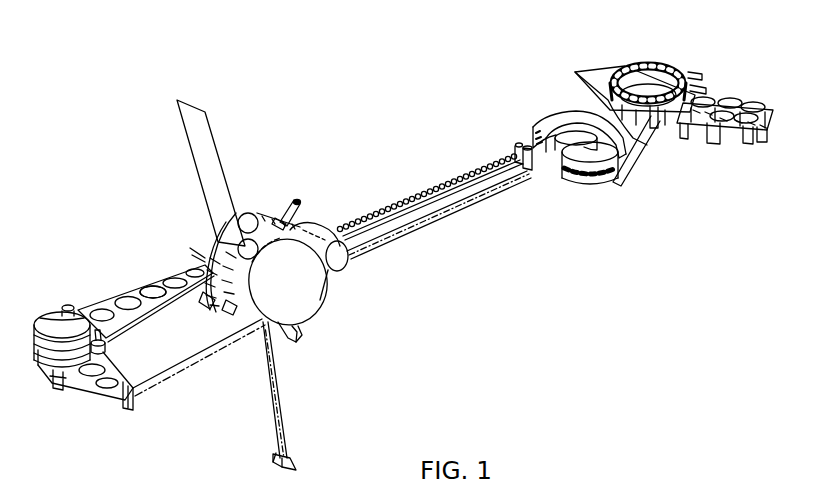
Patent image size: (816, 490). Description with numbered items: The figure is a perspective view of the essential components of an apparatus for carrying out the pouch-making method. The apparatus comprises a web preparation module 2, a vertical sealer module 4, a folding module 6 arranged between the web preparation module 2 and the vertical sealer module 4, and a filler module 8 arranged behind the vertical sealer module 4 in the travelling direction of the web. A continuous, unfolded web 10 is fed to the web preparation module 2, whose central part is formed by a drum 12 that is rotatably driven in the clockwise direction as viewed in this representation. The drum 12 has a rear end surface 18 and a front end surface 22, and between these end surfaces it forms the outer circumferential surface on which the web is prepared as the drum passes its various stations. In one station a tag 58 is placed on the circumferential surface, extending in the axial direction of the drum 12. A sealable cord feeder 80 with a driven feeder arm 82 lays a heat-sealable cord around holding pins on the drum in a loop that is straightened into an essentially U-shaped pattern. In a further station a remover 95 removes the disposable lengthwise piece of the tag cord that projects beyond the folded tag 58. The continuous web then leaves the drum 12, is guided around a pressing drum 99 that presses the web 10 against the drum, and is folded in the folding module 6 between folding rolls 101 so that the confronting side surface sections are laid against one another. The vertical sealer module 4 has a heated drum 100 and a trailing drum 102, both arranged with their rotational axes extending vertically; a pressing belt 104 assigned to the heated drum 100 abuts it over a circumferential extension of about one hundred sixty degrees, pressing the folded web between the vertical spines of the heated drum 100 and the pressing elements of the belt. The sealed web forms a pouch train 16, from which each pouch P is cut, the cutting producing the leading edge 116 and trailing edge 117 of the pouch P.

The web preparation module 2 is at (220, 380).
The vertical sealer module 4 is at (545, 76).
The folding module 6 is at (406, 122).
The filler module 8 is at (652, 55).
The unfolded web 10 is at (222, 144).
The drum 12 is at (260, 328).
The pouch train 16 is at (642, 160).
The rear end surface of the drum 18 is at (207, 253).
The front end surface of the drum 22 is at (300, 288).
The tag 58 is at (292, 341).
The sealable cord feeder 80 is at (118, 280).
The feeder arm 82 is at (176, 274).
The remover 95 is at (292, 190).
The pressing drum 99 is at (320, 237).
The heated drum 100 is at (552, 165).
The folding rolls 101 is at (514, 142).
The trailing drum 102 is at (593, 183).
The pressing belt 104 is at (560, 110).
The leading edge 116 is at (768, 133).
The trailing edge 117 is at (747, 142).
The pouch P is at (765, 150).